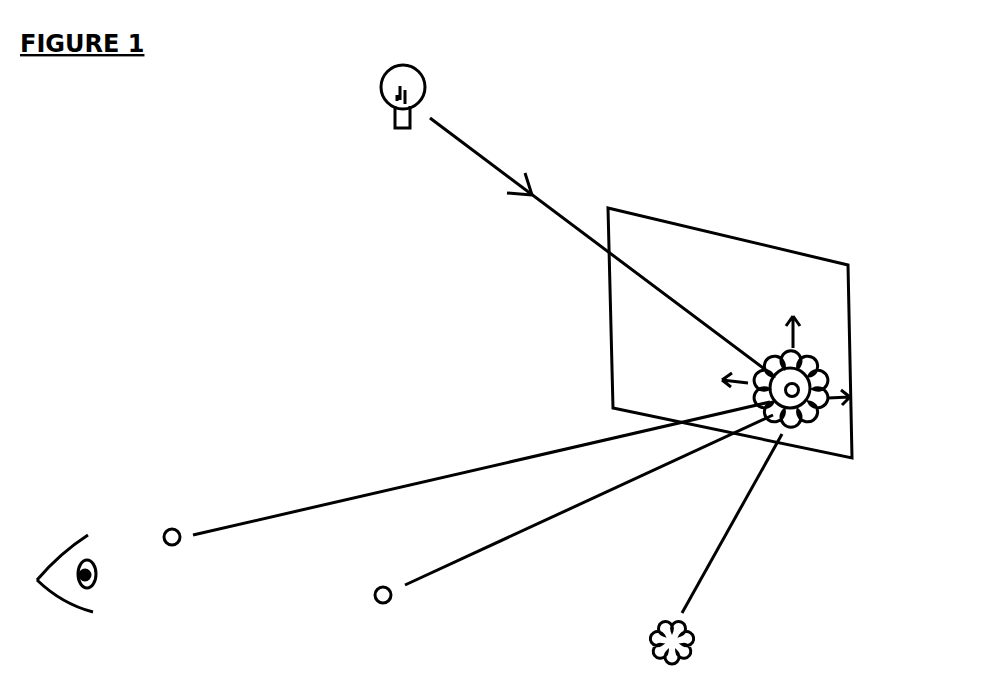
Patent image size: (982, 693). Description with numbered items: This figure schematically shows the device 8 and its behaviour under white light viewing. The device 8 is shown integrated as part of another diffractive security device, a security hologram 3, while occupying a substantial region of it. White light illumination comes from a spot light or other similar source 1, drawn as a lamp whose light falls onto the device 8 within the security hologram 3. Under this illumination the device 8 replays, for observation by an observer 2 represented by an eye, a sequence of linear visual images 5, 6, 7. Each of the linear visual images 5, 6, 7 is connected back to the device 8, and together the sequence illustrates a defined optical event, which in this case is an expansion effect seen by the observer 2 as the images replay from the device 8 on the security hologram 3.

The spot light or other similar source 1 is at (393, 100).
The observer 2 is at (83, 583).
The security hologram 3 is at (747, 333).
The linear visual image 5 is at (183, 554).
The linear visual image 6 is at (402, 607).
The linear visual image 7 is at (686, 642).
The device 8 is at (786, 382).